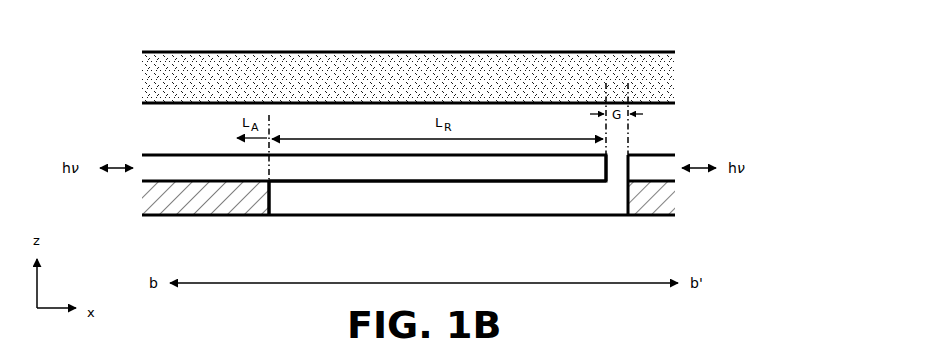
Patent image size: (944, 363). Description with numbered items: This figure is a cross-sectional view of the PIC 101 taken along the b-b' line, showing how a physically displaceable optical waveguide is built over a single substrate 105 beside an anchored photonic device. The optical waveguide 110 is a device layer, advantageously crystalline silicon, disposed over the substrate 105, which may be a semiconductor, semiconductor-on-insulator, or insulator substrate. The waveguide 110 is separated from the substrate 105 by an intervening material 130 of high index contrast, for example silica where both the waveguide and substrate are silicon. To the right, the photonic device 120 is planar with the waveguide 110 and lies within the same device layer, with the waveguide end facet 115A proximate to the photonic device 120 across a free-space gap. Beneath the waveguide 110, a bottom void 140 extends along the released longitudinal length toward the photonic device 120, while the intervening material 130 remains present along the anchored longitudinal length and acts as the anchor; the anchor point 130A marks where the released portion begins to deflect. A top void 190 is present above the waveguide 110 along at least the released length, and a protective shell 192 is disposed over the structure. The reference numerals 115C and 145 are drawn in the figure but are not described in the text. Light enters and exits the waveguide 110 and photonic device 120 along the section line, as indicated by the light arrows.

The PIC 101 is at (103, 62).
The shell 192 is at (408, 77).
The top void 190 is at (408, 129).
The optical waveguide 110 is at (374, 168).
The photonic device 120 is at (651, 165).
The intervening material 130 is at (408, 185).
The bottom void 140 is at (408, 198).
The anchor point 130A is at (273, 204).
The waveguide end facet 115A is at (611, 174).
The bottom surface of waveguide 115C is at (537, 185).
The air gap 145 is at (325, 240).
The substrate 105 is at (465, 238).